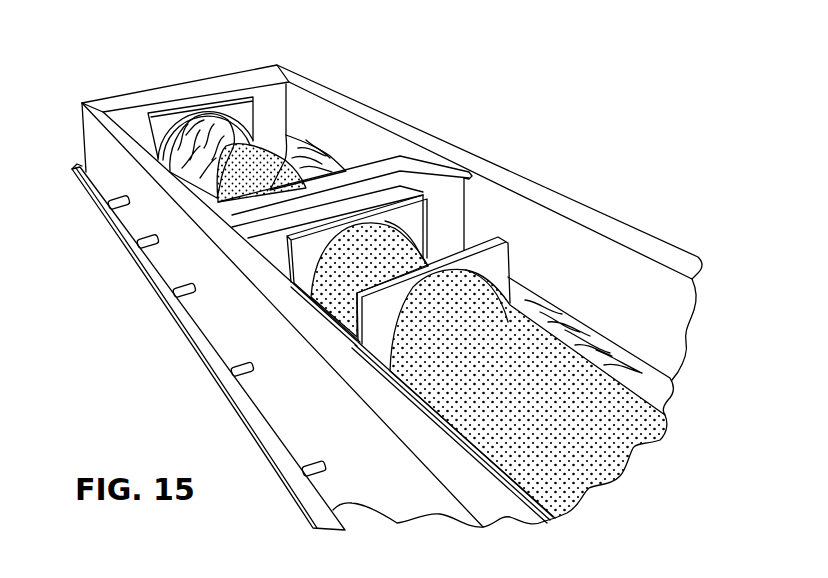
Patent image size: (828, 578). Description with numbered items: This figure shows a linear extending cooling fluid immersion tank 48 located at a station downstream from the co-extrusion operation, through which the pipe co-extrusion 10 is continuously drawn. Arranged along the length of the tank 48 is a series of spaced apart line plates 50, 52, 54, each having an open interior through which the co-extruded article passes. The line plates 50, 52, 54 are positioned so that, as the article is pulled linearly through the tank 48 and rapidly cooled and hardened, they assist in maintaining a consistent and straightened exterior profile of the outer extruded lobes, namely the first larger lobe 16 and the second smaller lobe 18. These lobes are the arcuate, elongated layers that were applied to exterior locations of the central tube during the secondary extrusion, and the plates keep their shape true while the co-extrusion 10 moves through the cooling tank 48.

The pipe co-extrusion 10 is at (492, 211).
The first larger lobe 16 is at (550, 406).
The second smaller lobe 18 is at (333, 314).
The cooling fluid immersion tank 48 is at (489, 172).
The line plate 50 is at (366, 313).
The line plate 52 is at (295, 252).
The line plate 54 is at (167, 125).